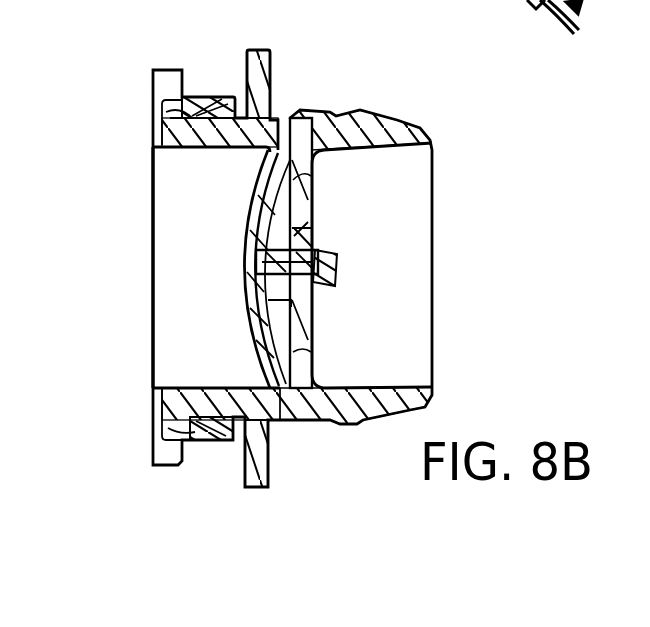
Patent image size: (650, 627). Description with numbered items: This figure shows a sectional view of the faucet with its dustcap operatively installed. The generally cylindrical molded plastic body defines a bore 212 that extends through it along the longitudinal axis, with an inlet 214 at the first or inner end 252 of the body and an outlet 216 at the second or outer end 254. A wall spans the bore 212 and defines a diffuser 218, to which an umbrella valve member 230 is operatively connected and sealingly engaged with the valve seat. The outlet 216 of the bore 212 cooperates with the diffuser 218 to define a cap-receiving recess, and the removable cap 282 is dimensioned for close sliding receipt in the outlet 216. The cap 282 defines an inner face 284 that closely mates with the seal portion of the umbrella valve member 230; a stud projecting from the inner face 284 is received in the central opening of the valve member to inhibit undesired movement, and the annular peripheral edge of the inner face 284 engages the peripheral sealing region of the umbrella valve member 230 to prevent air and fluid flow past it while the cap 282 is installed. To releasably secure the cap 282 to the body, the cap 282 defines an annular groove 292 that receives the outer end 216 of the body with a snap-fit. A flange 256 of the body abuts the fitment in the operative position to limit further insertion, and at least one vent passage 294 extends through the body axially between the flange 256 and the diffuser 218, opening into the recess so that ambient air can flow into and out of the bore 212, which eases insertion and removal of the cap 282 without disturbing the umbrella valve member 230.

The bore 212 is at (404, 380).
The inlet 214 is at (422, 268).
The outlet 216 is at (148, 347).
The diffuser 218 is at (315, 195).
The umbrella valve member 230 is at (291, 333).
The inner end 252 is at (436, 193).
The outer end 254 is at (152, 418).
The flange 256 is at (256, 491).
The cap 282 is at (145, 237).
The inner face 284 is at (284, 315).
The annular groove 292 is at (227, 94).
The vent passage 294 is at (283, 114).